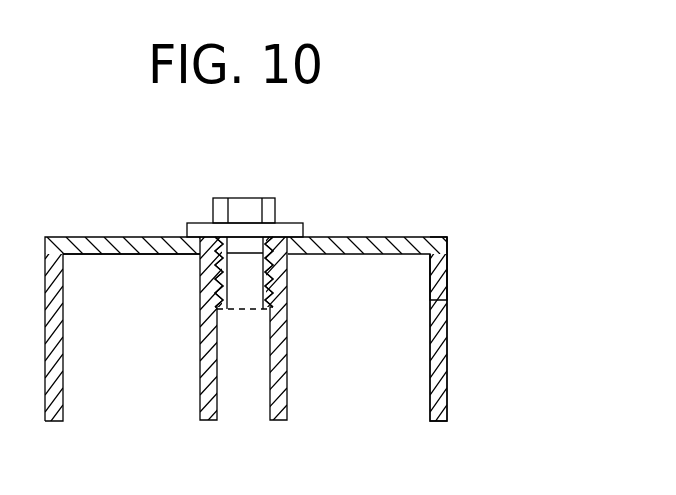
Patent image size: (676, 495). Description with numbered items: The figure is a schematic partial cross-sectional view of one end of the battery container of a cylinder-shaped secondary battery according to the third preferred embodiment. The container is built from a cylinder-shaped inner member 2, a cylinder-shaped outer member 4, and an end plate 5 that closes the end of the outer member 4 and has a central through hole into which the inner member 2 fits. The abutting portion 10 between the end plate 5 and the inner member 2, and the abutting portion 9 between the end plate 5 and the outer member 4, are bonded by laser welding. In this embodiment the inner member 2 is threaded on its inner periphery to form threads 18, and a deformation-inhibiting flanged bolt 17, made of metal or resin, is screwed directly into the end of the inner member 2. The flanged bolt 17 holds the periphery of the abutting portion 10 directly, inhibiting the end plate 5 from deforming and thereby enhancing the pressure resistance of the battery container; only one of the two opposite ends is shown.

The cylinder-shaped inner member 2 is at (288, 408).
The cylinder-shaped outer member 4 is at (448, 342).
The end plate 5 is at (387, 236).
The abutting portion 9 is at (438, 237).
The abutting portion 10 is at (180, 237).
The deformation-inhibiting flanged bolt 17 is at (275, 210).
The threads 18 is at (272, 293).